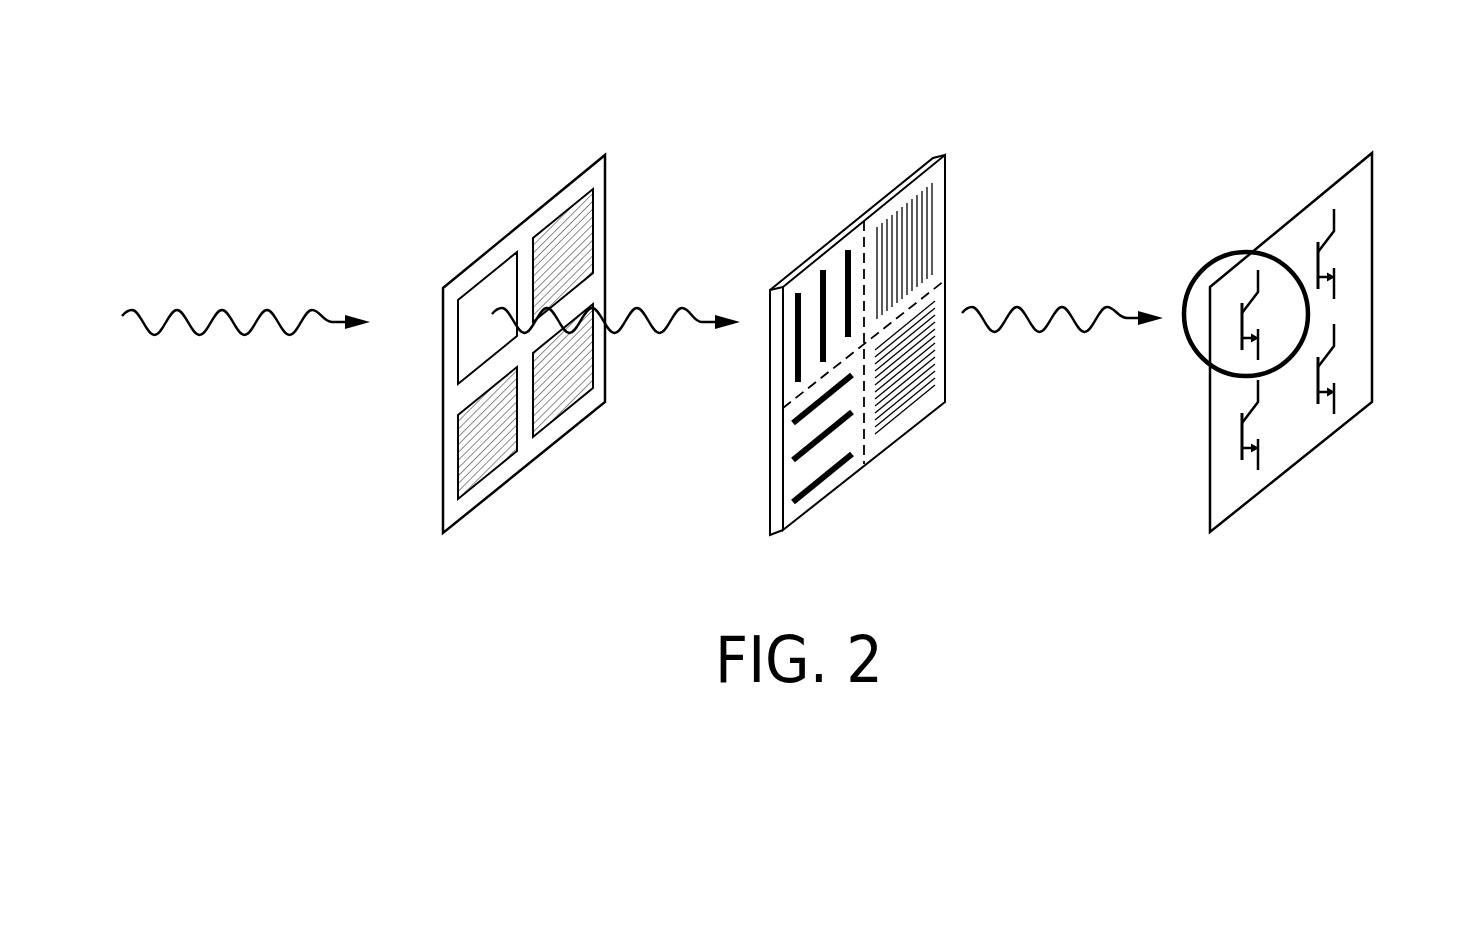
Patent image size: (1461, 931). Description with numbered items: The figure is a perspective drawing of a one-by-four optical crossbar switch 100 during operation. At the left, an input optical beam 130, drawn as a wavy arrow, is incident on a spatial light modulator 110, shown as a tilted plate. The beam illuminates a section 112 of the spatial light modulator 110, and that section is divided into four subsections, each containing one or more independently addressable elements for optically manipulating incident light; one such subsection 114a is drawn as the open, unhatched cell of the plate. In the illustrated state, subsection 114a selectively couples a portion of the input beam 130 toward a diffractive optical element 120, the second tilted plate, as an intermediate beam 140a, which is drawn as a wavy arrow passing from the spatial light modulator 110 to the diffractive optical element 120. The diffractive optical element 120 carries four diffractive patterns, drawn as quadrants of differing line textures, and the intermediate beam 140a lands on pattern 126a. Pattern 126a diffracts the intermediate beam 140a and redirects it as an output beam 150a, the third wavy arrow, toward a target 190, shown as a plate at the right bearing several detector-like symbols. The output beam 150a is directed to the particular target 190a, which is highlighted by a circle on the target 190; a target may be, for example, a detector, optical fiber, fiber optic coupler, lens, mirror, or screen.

The optical crossbar switch 100 is at (747, 100).
The spatial light modulator 110 is at (491, 357).
The section 112 is at (537, 210).
The subsection 114a is at (480, 300).
The diffractive optical element 120 is at (857, 356).
The diffractive pattern 126a is at (848, 262).
The input optical beam 130 is at (250, 335).
The intermediate beam 140a is at (681, 307).
The output beam 150a is at (1062, 305).
The target 190 is at (1310, 342).
The target 190a is at (1212, 262).